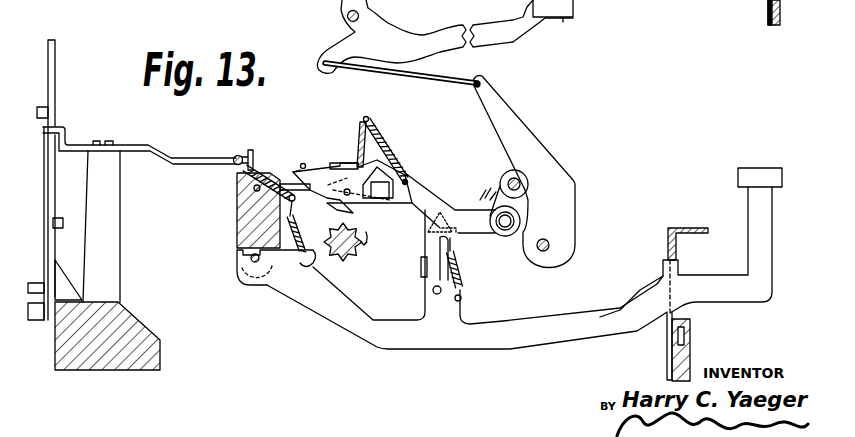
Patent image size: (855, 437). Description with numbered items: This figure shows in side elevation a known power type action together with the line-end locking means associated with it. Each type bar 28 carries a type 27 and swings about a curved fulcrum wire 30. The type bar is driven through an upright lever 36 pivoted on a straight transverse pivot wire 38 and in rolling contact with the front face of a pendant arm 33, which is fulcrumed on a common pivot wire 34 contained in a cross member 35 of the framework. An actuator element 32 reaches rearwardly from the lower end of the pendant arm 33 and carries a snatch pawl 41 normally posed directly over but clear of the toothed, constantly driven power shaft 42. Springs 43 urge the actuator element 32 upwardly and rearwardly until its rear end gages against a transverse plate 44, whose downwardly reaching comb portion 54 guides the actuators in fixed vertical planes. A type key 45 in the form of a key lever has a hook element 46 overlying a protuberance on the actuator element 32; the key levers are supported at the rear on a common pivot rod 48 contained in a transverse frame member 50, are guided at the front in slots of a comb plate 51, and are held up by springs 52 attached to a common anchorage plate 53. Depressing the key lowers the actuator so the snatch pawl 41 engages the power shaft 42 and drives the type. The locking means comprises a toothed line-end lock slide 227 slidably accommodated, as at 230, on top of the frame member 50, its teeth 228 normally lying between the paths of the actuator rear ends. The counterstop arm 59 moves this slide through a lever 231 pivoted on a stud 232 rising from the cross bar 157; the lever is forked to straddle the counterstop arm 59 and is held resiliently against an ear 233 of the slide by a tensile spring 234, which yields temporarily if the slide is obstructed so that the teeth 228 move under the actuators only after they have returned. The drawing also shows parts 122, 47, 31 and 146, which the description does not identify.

The counterstop arm 59 is at (57, 90).
The lever 231 is at (130, 146).
The stud 232 is at (88, 188).
The cross bar 157 is at (162, 357).
The tensile spring 234 is at (237, 156).
The ear 233 is at (251, 150).
The slide accommodation 230 is at (263, 172).
The transverse frame member 50 is at (237, 230).
The toothed line-end lock slide 227 is at (288, 182).
The teeth 228 is at (303, 164).
The snatch pawl 41 is at (355, 214).
The comb portion 54 is at (331, 187).
The transverse plate 44 is at (352, 158).
The springs 43 is at (377, 136).
The actuator element 32 is at (436, 175).
The anchorage plate 53 is at (296, 198).
The springs 52 is at (299, 230).
The power shaft 42 is at (343, 258).
The common pivot rod 48 is at (263, 256).
The frame 122 is at (594, 338).
The hook elements 46 is at (432, 227).
The spring 47 is at (464, 246).
The upright levers 36 is at (574, 208).
The pendant arm 33 is at (506, 174).
The cross member 35 is at (482, 199).
The common pivot wire 34 is at (529, 204).
The transverse pivot wire 38 is at (545, 240).
The type bars 28 is at (436, 31).
The curved fulcrum wire 30 is at (348, 19).
The rod 31 is at (418, 78).
The types 27 is at (560, 19).
The type key 45 is at (738, 180).
The comb plate 51 is at (668, 243).
The strip 146 is at (692, 363).